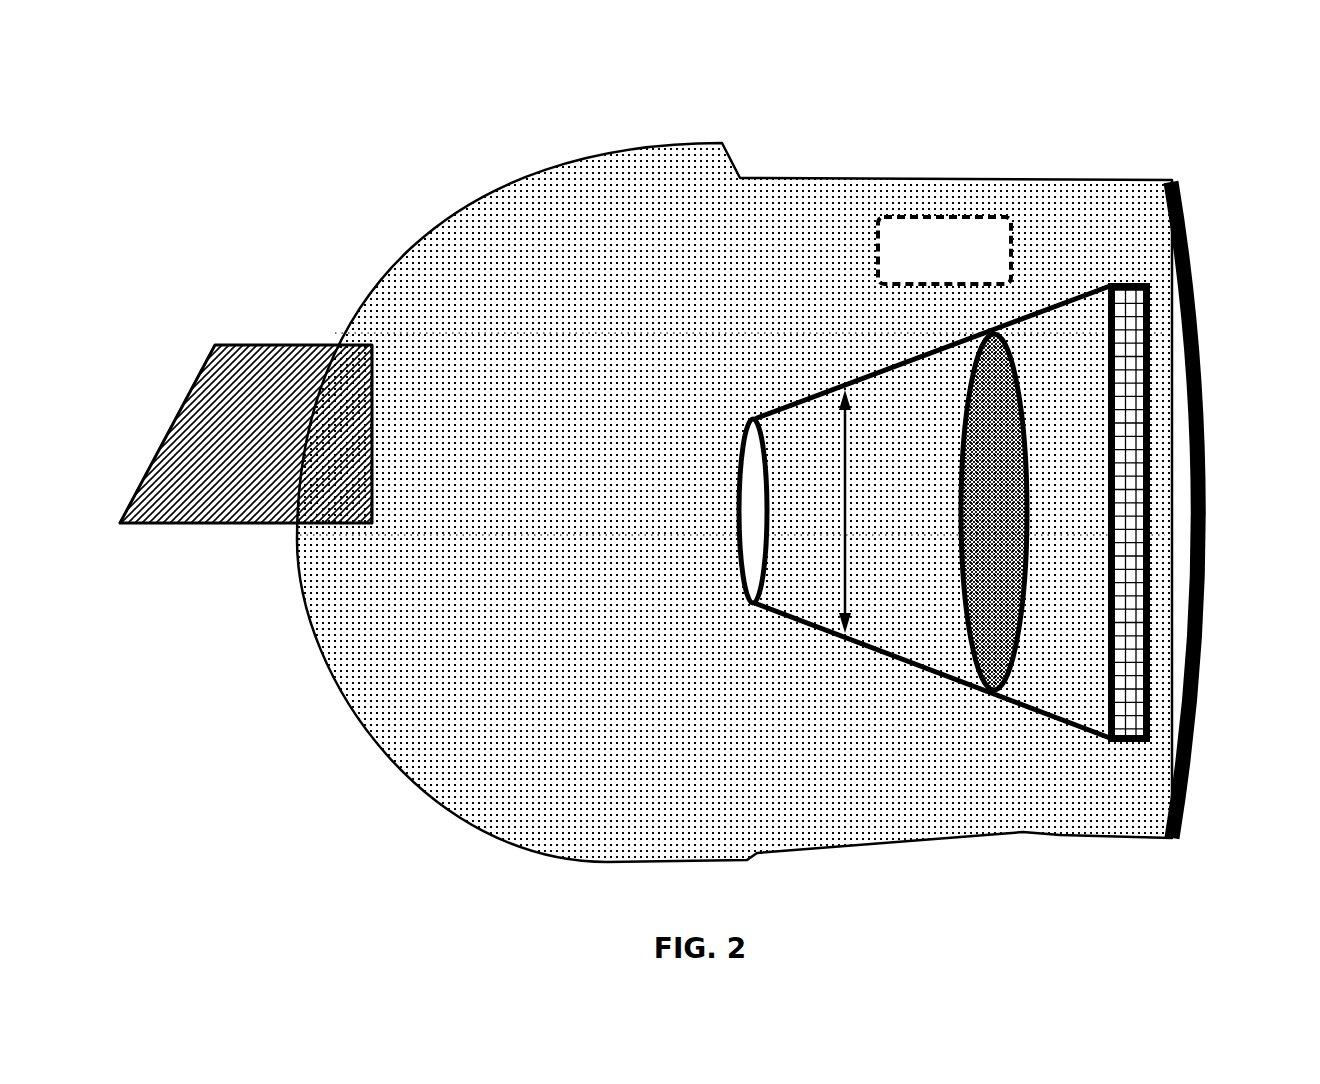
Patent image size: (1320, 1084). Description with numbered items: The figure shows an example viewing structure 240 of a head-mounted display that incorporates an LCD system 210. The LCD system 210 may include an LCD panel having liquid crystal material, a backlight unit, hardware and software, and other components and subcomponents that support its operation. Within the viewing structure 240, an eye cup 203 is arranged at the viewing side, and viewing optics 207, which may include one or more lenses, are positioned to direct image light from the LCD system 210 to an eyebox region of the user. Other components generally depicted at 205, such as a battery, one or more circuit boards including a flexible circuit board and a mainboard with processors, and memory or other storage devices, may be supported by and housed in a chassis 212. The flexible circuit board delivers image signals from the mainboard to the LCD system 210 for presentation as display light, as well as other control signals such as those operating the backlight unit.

The viewing structure 240 is at (1135, 104).
The LCD system 210 is at (1128, 283).
The chassis 212 is at (1200, 317).
The other components 205 is at (927, 261).
The eye cup 203 is at (850, 511).
The viewing optics 207 is at (976, 520).